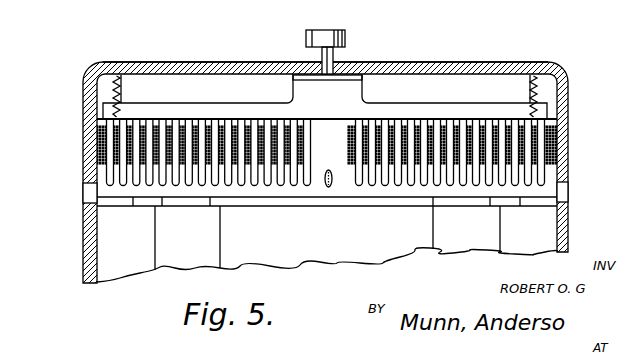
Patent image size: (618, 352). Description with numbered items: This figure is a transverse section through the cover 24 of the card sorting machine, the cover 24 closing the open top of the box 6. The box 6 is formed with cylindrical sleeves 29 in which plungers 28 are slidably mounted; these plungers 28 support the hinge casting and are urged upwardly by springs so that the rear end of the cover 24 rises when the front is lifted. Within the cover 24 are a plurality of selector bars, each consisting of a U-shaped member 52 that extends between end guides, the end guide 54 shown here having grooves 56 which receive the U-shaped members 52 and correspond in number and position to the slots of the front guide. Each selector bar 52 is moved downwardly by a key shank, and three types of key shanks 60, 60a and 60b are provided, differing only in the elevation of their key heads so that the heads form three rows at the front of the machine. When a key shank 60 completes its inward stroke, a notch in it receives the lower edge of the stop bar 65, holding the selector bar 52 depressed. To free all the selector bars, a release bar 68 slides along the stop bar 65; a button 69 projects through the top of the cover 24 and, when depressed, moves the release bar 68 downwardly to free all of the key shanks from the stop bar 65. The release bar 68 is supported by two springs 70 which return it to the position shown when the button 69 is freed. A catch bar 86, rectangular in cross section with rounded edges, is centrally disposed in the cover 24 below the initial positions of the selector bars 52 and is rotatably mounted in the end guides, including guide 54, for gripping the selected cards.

The box 6 is at (85, 248).
The cover 24 is at (447, 63).
The plunger 28 is at (193, 205).
The cylindrical sleeve 29 is at (195, 258).
The U-shaped member 52 is at (545, 143).
The end guide 54 is at (553, 168).
The grooves 56 is at (264, 187).
The key shank 60 is at (125, 127).
The key shank 60a is at (138, 127).
The key shank 60b is at (107, 145).
The stop bar 65 is at (233, 80).
The release bar 68 is at (415, 108).
The button 69 is at (333, 32).
The springs 70 is at (113, 90).
The catch bar 86 is at (329, 187).